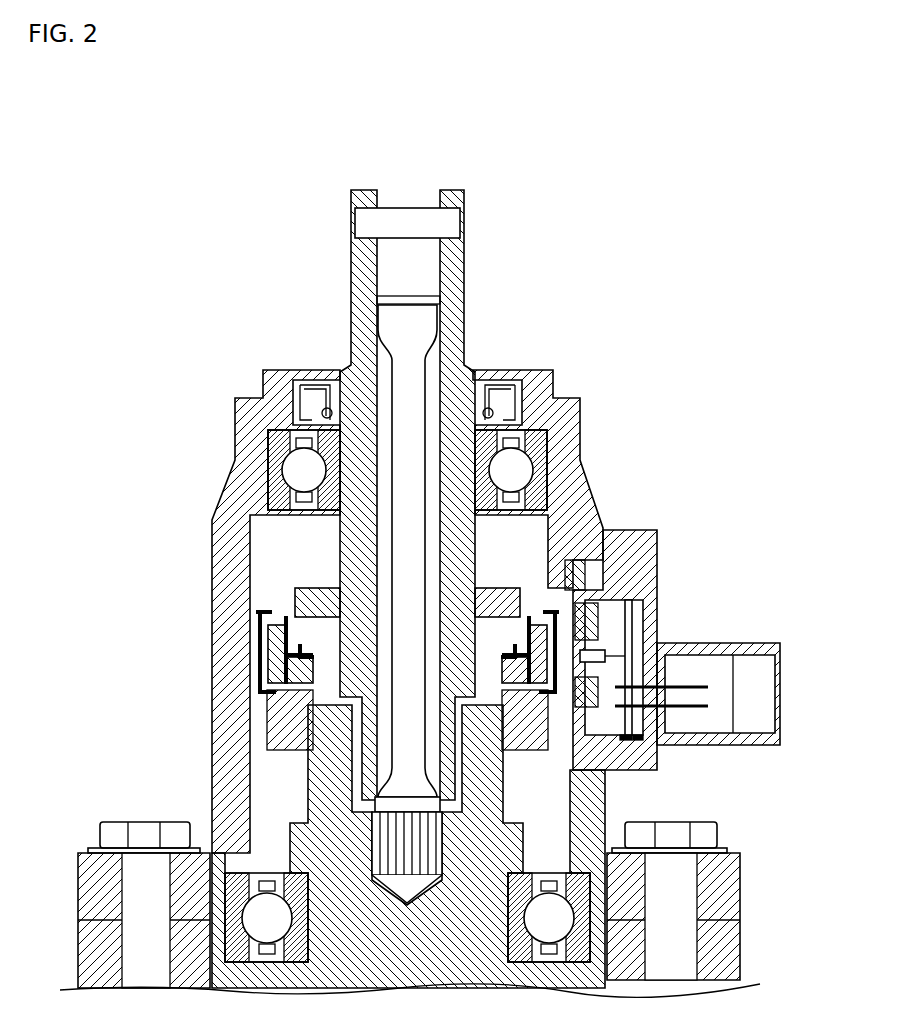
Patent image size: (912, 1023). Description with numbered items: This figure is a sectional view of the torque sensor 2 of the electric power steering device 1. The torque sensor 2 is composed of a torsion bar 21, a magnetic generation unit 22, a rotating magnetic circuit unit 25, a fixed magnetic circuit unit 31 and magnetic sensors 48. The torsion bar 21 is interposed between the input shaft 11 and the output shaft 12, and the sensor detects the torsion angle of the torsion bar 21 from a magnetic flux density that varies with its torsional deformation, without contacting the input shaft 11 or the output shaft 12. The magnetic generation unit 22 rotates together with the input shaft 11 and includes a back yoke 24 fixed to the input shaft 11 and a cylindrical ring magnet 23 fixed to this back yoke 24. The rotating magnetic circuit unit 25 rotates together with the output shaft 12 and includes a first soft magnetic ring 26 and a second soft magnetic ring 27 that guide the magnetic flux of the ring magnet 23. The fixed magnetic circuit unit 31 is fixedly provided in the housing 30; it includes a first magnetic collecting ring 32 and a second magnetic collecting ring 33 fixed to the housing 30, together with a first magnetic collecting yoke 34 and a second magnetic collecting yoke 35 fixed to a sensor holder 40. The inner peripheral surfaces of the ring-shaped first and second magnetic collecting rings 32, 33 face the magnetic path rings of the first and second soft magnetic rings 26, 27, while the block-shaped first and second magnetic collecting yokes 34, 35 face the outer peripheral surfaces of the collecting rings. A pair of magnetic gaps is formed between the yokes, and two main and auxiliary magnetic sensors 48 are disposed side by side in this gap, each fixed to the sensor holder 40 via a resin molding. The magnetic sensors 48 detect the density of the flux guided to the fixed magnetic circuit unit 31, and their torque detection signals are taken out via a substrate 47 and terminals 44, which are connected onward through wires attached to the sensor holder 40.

The electric power steering device 1 is at (613, 366).
The torque sensor 2 is at (665, 527).
The input shaft 11 is at (357, 260).
The output shaft 12 is at (290, 850).
The torsion bar 21 is at (397, 317).
The magnetic generation unit 22 is at (122, 543).
The ring magnet 23 is at (262, 612).
The back yoke 24 is at (298, 590).
The rotating magnetic circuit unit 25 is at (125, 633).
The first soft magnetic ring 26 is at (270, 640).
The second soft magnetic ring 27 is at (266, 696).
The housing 30 is at (235, 420).
The fixed magnetic circuit unit 31 is at (745, 528).
The first magnetic collecting ring 32 is at (640, 580).
The second magnetic collecting ring 33 is at (606, 637).
The first magnetic collecting yoke 34 is at (633, 622).
The second magnetic collecting yoke 35 is at (604, 650).
The sensor holder 40 is at (743, 746).
The terminals 44 is at (692, 708).
The substrate 47 is at (640, 715).
The magnetic sensors 48 is at (625, 718).